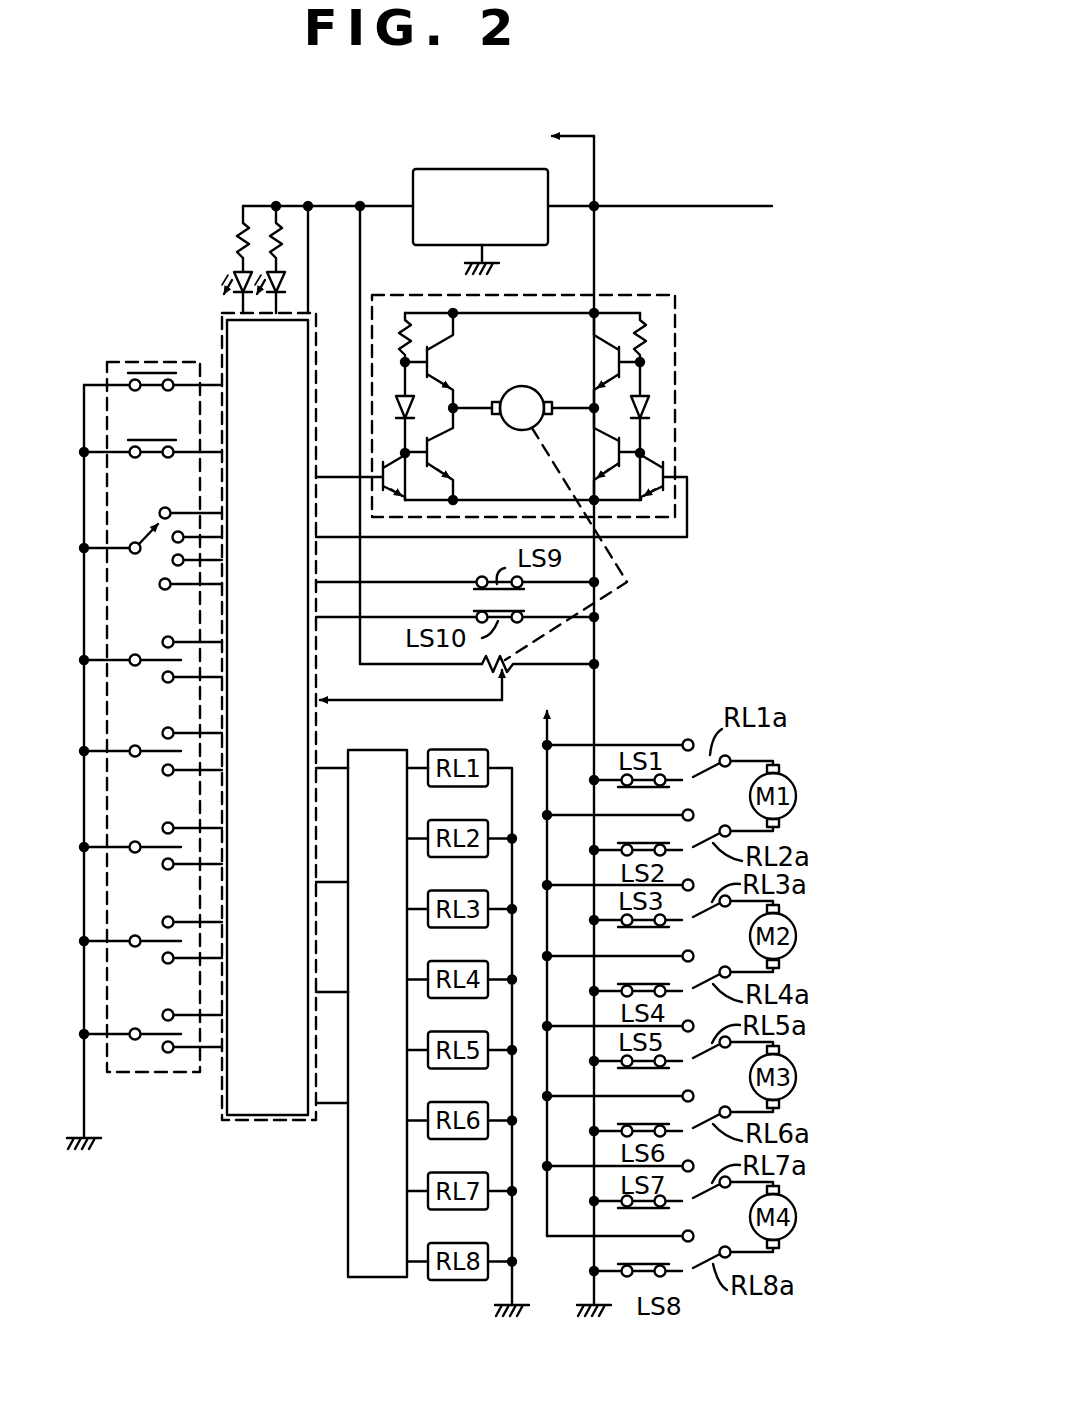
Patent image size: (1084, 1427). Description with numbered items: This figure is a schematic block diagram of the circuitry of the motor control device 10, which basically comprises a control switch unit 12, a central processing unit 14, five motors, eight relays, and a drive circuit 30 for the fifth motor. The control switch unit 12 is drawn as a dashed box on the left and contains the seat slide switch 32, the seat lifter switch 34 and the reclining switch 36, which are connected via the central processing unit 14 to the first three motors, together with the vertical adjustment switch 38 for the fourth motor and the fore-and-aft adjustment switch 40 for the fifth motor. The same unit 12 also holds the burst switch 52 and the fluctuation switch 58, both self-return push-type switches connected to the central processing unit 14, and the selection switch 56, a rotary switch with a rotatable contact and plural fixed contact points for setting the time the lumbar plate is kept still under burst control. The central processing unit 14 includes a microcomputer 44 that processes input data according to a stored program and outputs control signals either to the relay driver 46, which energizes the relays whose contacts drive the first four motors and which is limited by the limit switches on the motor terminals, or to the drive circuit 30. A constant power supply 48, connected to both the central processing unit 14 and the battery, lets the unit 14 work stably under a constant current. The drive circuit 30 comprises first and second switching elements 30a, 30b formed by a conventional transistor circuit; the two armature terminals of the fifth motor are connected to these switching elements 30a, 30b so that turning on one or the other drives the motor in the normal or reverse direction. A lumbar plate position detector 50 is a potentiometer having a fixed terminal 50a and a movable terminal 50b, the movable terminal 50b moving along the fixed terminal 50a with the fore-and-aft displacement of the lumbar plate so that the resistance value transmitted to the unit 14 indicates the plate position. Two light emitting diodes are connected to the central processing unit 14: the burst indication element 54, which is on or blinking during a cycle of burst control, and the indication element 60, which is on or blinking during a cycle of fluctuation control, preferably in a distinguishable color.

The motor control device 10 is at (199, 171).
The control switch unit 12 is at (131, 358).
The central processing unit 14 is at (233, 1122).
The drive circuit 30 is at (530, 416).
The first switching element 30a is at (464, 440).
The second switching element 30b is at (574, 350).
The seat slide switch 32 is at (152, 662).
The seat lifter switch 34 is at (152, 753).
The reclining switch 36 is at (152, 849).
The vertical adjustment switch 38 is at (150, 944).
The fore-and-aft adjustment switch 40 is at (160, 1032).
The microcomputer 44 is at (287, 1112).
The relay driver 46 is at (348, 1243).
The constant power supply 48 is at (470, 169).
The lumbar plate position detector 50 is at (457, 697).
The fixed terminal 50a is at (510, 667).
The movable terminal 50b is at (505, 694).
The burst switch 52 is at (150, 438).
The burst indication element 54 is at (238, 272).
The selection switch 56 is at (155, 563).
The fluctuation switch 58 is at (156, 372).
The indication element 60 is at (278, 268).